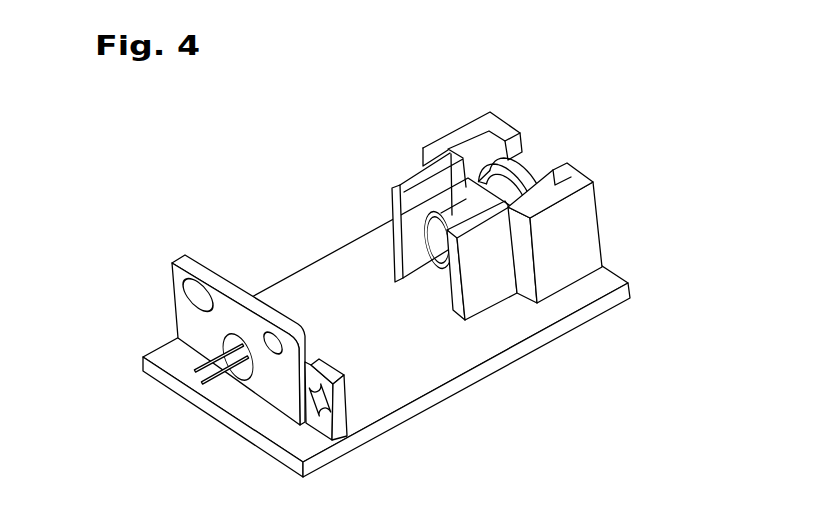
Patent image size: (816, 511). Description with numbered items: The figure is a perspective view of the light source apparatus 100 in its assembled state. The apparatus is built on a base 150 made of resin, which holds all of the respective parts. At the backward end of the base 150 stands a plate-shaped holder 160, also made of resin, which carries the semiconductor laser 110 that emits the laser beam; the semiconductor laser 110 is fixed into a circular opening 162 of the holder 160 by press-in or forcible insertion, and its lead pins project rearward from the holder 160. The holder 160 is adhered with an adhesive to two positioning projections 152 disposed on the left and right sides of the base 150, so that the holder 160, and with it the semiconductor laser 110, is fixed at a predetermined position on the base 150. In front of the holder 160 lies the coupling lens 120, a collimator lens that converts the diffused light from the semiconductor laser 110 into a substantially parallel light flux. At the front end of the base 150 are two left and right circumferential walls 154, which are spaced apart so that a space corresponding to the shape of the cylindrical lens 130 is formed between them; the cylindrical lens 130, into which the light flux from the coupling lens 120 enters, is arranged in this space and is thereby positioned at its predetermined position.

The light source apparatus 100 is at (227, 163).
The semiconductor laser 110 is at (243, 378).
The coupling lens 120 is at (440, 226).
The cylindrical lens 130 is at (540, 159).
The base 150 is at (498, 374).
The positioning projection 152 is at (345, 404).
The circumferential wall 154 is at (451, 140).
The holder 160 is at (206, 272).
The circular opening 162 is at (233, 336).